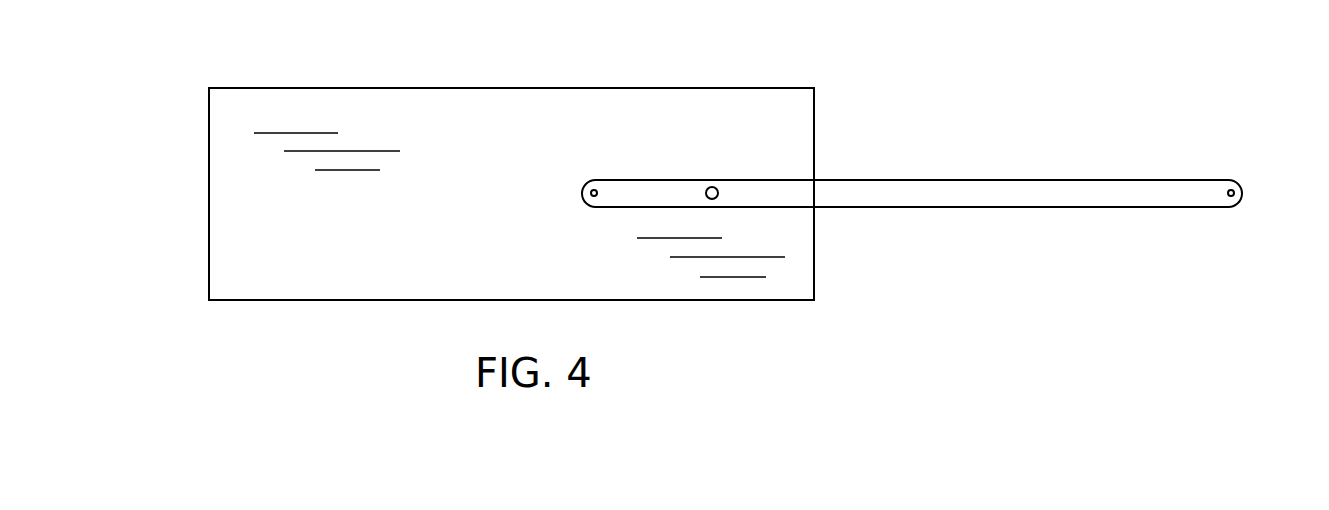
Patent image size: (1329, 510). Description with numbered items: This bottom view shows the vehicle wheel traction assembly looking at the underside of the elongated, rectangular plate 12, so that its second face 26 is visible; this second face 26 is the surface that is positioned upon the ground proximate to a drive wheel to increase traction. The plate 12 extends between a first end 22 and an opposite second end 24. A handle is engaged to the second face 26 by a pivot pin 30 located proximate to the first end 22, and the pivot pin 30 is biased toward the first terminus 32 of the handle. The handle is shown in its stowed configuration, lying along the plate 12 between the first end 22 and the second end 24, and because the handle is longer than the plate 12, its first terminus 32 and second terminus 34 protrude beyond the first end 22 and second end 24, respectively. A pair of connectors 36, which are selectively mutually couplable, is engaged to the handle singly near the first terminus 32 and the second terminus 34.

The plate 12 is at (424, 88).
The first end 22 is at (814, 141).
The second end 24 is at (209, 207).
The second face 26 is at (477, 208).
The pivot pin 30 is at (712, 187).
The first terminus 32 is at (583, 185).
The second terminus 34 is at (1243, 194).
The connectors 36 is at (597, 196).